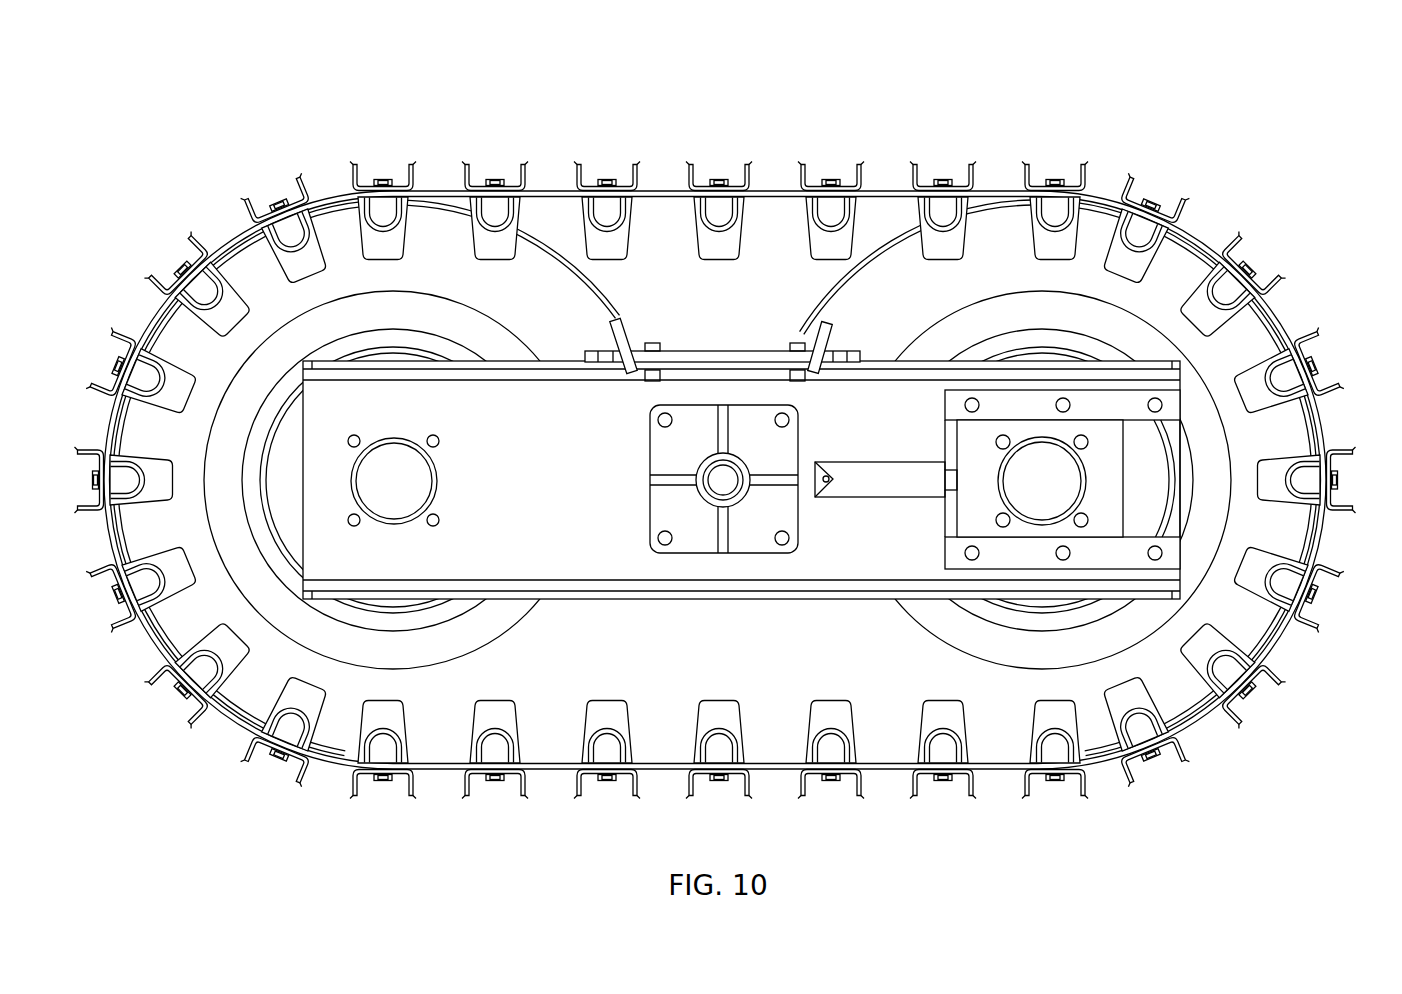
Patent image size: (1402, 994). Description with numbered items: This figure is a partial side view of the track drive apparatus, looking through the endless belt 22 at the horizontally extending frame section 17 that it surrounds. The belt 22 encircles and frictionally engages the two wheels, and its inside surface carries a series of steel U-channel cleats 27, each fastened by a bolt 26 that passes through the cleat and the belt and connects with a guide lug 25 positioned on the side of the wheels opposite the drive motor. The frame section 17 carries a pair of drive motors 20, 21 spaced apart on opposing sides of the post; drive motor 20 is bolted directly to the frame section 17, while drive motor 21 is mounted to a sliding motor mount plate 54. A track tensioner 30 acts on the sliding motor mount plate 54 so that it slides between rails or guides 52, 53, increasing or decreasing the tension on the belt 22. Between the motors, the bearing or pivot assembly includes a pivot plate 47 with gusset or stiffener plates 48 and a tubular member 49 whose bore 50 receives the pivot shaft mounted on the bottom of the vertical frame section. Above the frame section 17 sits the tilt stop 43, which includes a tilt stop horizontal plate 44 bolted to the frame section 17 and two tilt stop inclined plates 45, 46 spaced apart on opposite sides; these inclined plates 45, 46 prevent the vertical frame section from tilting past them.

The horizontally extending frame section 17 is at (495, 540).
The drive motor 20 is at (381, 493).
The drive motor 21 is at (1029, 493).
The belt 22 is at (773, 189).
The guide lug 25 is at (392, 262).
The bolt 26 is at (270, 208).
The cleat 27 is at (354, 168).
The track tensioner 30 is at (950, 447).
The tilt stop 43 is at (760, 225).
The tilt stop horizontal plate 44 is at (707, 350).
The tilt stop inclined plate 45 is at (613, 320).
The tilt stop inclined plate 46 is at (838, 315).
The pivot plate 47 is at (650, 430).
The gusset/stiffener plate 48 is at (713, 438).
The tubular member 49 is at (742, 492).
The bore 50 is at (728, 475).
The rail/guide 52 is at (1183, 393).
The rail/guide 53 is at (1186, 567).
The sliding motor mount plate 54 is at (1113, 468).